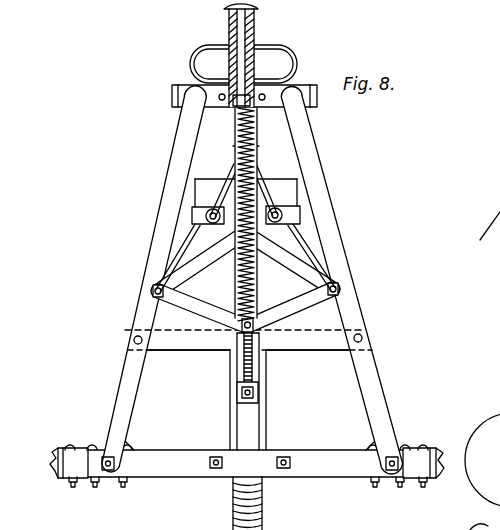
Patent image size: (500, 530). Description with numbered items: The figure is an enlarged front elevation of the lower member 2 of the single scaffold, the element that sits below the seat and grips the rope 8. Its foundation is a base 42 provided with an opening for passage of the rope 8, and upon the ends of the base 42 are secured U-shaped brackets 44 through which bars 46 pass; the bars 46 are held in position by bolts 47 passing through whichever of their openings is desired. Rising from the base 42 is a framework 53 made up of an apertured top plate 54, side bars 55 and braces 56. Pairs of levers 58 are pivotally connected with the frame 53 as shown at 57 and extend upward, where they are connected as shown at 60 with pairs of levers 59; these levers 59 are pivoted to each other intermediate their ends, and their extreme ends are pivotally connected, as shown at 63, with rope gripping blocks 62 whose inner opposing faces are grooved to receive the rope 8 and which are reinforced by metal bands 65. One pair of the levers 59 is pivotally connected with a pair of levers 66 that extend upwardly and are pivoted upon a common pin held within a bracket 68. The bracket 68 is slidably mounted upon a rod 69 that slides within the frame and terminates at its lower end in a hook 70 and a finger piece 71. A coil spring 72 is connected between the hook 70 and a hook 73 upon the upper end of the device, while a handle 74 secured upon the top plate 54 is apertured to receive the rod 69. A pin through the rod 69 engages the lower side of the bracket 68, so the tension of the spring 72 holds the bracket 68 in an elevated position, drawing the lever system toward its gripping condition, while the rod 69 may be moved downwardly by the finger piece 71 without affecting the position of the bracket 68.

The lower member 2 is at (158, 143).
The rope 8 is at (232, 505).
The base 42 is at (350, 460).
The U-shaped bracket 44 is at (56, 455).
The bar 46 is at (75, 478).
The bolt 47 is at (70, 445).
The framework 53 is at (103, 399).
The top plate 54 is at (189, 93).
The side bar 55 is at (124, 374).
The brace 56 is at (325, 352).
The pivotal connection 57 is at (235, 367).
The lever 58 is at (168, 300).
The lever 59 is at (245, 281).
The pivotal connection 60 is at (152, 291).
The rope gripping block 62 is at (180, 248).
The pivotal connection 63 is at (204, 225).
The band 65 is at (190, 215).
The lever 66 is at (227, 190).
The bracket 68 is at (258, 153).
The rod 69 is at (241, 38).
The hook 70 is at (240, 336).
The finger piece 71 is at (256, 380).
The coil spring 72 is at (234, 145).
The hook 73 is at (240, 99).
The handle 74 is at (295, 52).